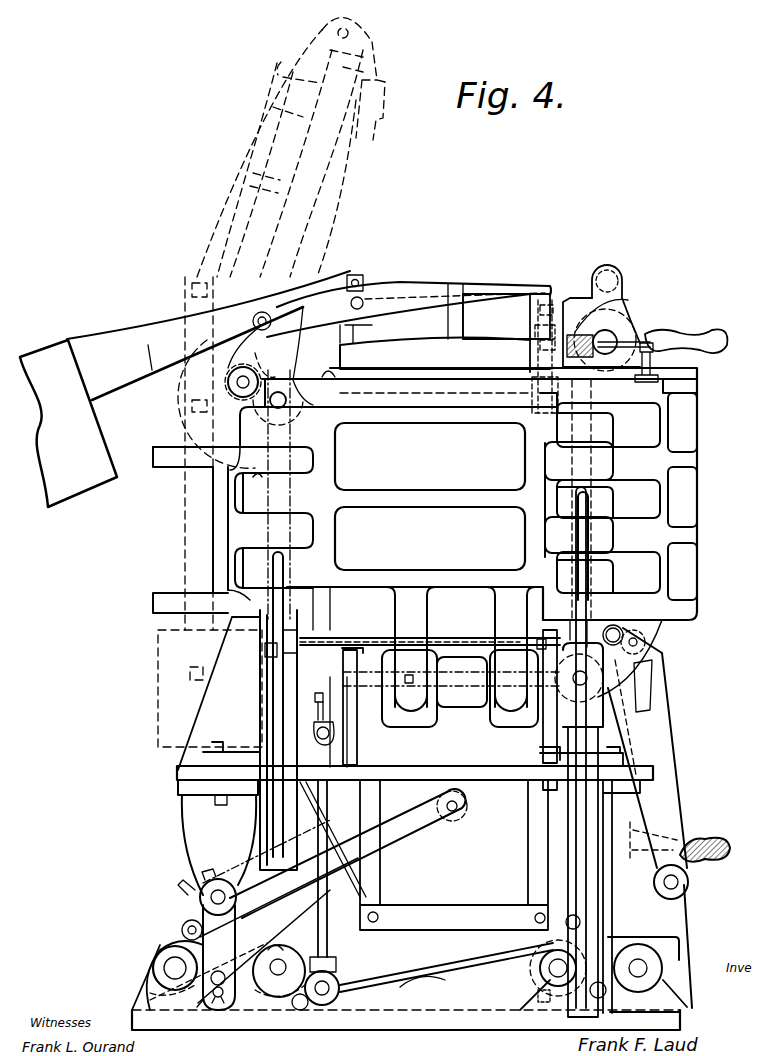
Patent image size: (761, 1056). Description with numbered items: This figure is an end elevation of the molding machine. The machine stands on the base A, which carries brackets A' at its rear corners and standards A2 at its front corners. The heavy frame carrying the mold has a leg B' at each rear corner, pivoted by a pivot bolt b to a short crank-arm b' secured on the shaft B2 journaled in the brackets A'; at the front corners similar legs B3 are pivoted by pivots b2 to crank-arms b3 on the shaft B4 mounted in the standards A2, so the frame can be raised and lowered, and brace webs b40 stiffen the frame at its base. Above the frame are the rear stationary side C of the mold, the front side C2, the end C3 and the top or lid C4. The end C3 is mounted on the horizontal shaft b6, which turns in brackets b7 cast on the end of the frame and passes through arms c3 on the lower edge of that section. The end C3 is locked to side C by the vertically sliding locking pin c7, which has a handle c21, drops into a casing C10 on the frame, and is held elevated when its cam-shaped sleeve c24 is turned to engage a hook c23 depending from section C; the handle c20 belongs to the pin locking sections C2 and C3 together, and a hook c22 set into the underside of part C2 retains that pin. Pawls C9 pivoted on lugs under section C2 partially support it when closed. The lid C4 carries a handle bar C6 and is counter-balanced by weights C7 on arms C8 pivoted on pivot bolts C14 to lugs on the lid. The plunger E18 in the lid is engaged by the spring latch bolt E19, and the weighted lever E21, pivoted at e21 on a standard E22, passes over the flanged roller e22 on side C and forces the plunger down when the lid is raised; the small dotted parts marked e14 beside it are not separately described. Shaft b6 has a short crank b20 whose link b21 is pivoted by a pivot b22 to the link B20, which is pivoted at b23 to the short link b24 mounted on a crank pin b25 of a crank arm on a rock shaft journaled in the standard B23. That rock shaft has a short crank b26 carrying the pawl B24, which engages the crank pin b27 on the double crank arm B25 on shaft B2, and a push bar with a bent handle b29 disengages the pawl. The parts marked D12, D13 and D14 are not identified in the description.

The top or lid of the mold C4 is at (281, 324).
The counter-balancing weights C7 is at (68, 423).
The arms C8 is at (112, 356).
The flanged roller e22 is at (227, 378).
The weighted lever E21 is at (445, 271).
The pivot e21 is at (362, 306).
The pivot bolts C14 is at (493, 347).
The standard E22 is at (436, 357).
The handle bar C6 is at (608, 272).
The spring latch bolt E19 is at (595, 323).
The adjusting screw e14 is at (556, 312).
The plunger E18 is at (530, 403).
The rear stationary side of the mold C is at (425, 494).
The sliding locking pin c7 is at (280, 477).
The front side of the mold C2 is at (602, 498).
The end of the mold C3 is at (430, 496).
The handle c20 is at (583, 533).
The downwardly projecting arms c3 is at (461, 647).
The horizontal shaft b6 is at (472, 682).
The cam-shaped sleeve c24 is at (290, 647).
The hook c23 is at (267, 657).
The handle c21 is at (280, 690).
The brace webs b40 is at (219, 693).
The casing C10 is at (265, 732).
The short crank b20 is at (332, 690).
The link b21 is at (323, 718).
The pivot b22 is at (327, 733).
The brackets or standards b7 is at (350, 707).
The hook c22 is at (600, 673).
The pawls C9 is at (650, 697).
The pivot D13 is at (465, 789).
The link D14 is at (334, 853).
The link B20 is at (323, 810).
The legs B3 is at (432, 885).
The leg B' is at (218, 837).
The crank pin b27 is at (193, 920).
The standard B23 is at (230, 958).
The pivot bolt b is at (218, 980).
The shaft B2 is at (170, 963).
The double crank arm B25 is at (170, 933).
The brackets A' is at (137, 977).
The pawl B24 is at (243, 937).
The eccentric D12 is at (270, 980).
The short crank b26 is at (287, 957).
The pivot b23 is at (337, 960).
The short link b24 is at (340, 977).
The crank pin b25 is at (320, 995).
The short crank-arm b' is at (208, 1026).
The base or stand A is at (406, 1032).
The shaft B4 is at (537, 967).
The standards A2 is at (540, 993).
The crank-arms b3 is at (560, 1007).
The pivots b2 is at (600, 998).
The handle b29 is at (656, 964).